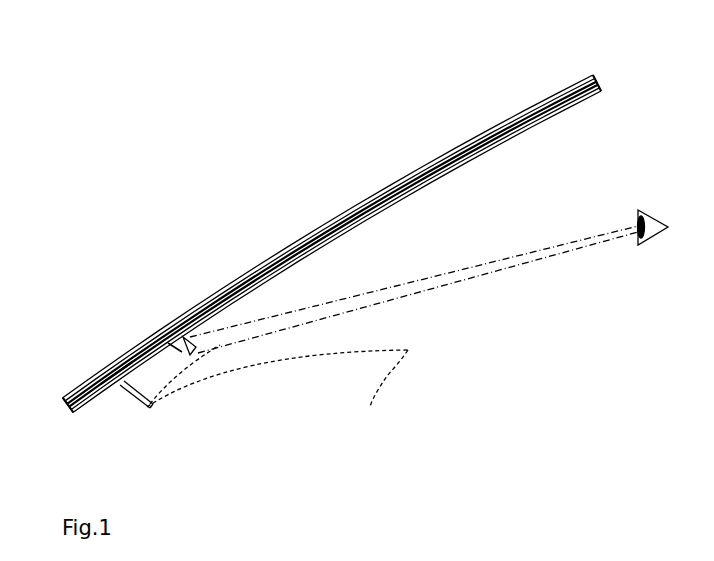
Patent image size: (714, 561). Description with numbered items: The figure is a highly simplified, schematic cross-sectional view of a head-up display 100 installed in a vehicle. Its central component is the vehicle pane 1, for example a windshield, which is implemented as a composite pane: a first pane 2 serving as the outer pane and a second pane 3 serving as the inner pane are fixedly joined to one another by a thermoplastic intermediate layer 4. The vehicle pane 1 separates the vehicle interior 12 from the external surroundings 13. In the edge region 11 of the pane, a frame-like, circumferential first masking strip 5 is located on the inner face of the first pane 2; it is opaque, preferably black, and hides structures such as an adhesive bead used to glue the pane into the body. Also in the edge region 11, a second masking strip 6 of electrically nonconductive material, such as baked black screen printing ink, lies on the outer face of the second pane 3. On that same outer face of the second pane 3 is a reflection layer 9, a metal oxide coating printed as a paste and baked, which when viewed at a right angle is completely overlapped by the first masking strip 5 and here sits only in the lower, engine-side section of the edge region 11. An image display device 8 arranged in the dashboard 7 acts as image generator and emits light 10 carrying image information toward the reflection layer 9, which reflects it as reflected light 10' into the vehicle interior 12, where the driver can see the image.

The vehicle pane 1 is at (429, 160).
The first pane 2 is at (538, 108).
The second pane 3 is at (531, 120).
The thermoplastic intermediate layer 4 is at (505, 124).
The first masking strip 5 is at (115, 365).
The second masking strip 6 is at (88, 411).
The dashboard 7 is at (393, 372).
The image display device 8 is at (147, 410).
The reflection layer 9 is at (175, 348).
The light 10 is at (203, 373).
The reflected light 10' is at (414, 289).
The edge region 11 is at (83, 386).
The vehicle interior 12 is at (489, 209).
The external surroundings 13 is at (319, 213).
The head-up display 100 is at (186, 195).